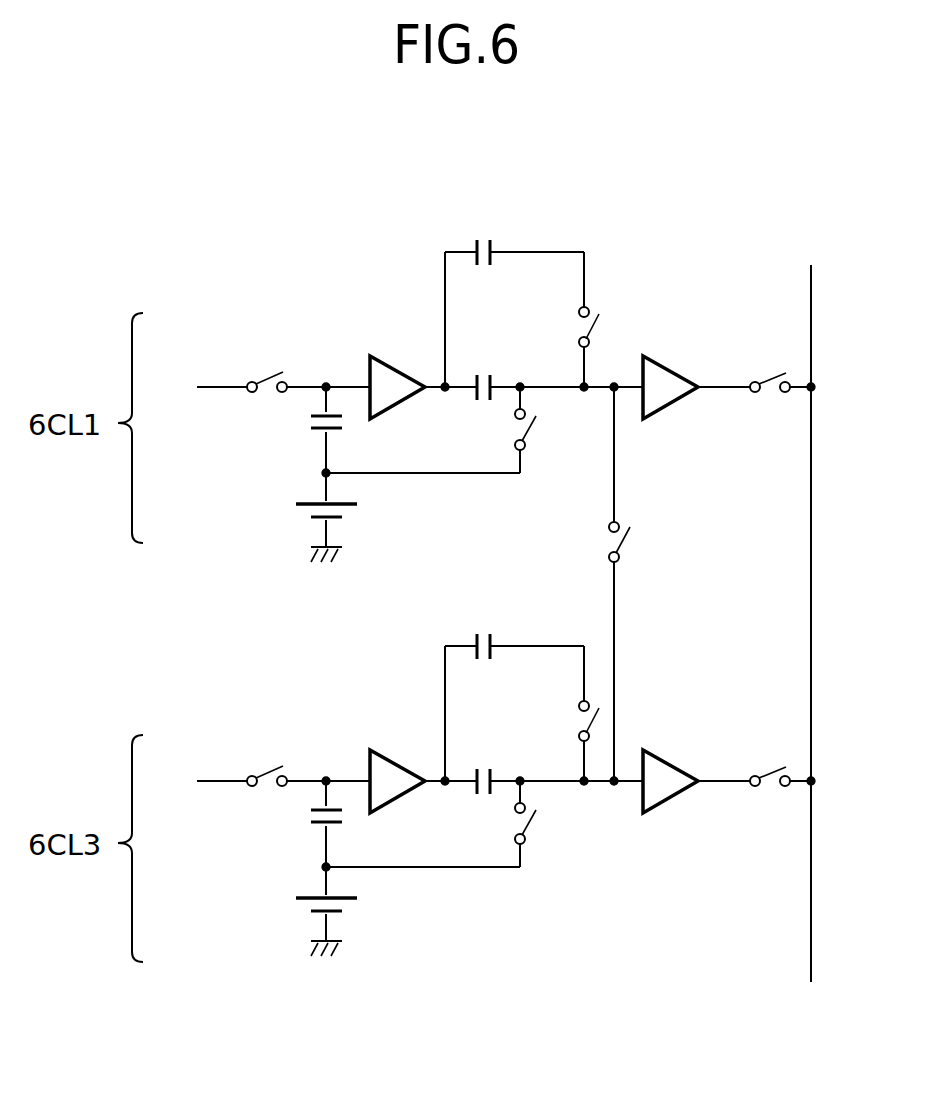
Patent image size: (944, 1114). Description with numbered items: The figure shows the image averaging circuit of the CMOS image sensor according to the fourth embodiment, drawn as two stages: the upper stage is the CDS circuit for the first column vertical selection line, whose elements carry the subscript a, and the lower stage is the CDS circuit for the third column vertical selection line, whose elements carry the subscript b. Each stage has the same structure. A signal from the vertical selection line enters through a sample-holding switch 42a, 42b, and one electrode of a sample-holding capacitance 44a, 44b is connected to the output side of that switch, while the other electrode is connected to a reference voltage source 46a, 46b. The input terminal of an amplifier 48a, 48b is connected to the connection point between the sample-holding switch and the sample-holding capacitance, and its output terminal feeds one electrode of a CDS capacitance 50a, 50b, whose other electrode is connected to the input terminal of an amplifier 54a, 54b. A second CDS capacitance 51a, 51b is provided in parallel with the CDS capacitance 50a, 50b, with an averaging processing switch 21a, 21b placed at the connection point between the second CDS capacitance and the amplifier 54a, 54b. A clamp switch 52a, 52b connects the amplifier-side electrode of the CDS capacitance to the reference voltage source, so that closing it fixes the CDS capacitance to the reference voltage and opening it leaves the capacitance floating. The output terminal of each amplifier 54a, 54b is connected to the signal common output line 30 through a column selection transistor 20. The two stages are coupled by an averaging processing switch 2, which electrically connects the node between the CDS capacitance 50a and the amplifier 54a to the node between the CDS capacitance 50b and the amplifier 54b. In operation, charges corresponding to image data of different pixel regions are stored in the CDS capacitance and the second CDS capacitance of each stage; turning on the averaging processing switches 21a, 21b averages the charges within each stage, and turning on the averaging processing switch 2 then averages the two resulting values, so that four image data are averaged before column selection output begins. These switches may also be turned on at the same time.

The averaging processing switch 2 is at (633, 545).
The column selection transistor 20 is at (772, 370).
The averaging processing switch 21a is at (578, 327).
The averaging processing switch 21b is at (578, 721).
The signal common output line 30 is at (813, 318).
The sample-holding switch 42a is at (273, 372).
The sample-holding switch 42b is at (273, 766).
The sample-holding capacitance 44a is at (350, 423).
The sample-holding capacitance 44b is at (350, 817).
The reference voltage source 46a is at (350, 515).
The reference voltage source 46b is at (350, 909).
The amplifier 48a is at (400, 358).
The amplifier 48b is at (400, 752).
The CDS capacitance 50a is at (485, 372).
The CDS capacitance 50b is at (485, 766).
The second CDS capacitance 51a is at (485, 237).
The second CDS capacitance 51b is at (485, 631).
The clamp switch 52a is at (531, 446).
The clamp switch 52b is at (531, 840).
The amplifier 54a is at (672, 366).
The amplifier 54b is at (672, 760).